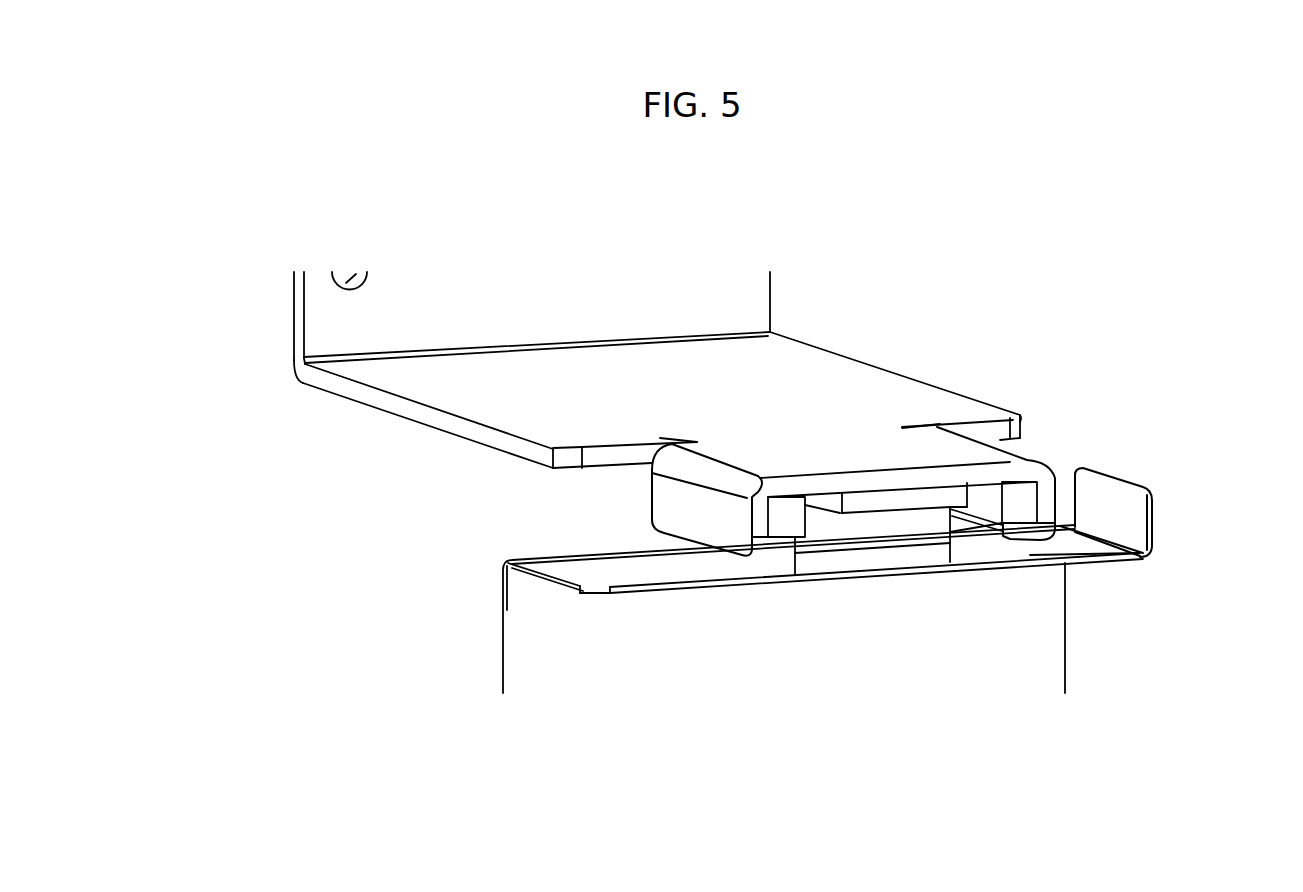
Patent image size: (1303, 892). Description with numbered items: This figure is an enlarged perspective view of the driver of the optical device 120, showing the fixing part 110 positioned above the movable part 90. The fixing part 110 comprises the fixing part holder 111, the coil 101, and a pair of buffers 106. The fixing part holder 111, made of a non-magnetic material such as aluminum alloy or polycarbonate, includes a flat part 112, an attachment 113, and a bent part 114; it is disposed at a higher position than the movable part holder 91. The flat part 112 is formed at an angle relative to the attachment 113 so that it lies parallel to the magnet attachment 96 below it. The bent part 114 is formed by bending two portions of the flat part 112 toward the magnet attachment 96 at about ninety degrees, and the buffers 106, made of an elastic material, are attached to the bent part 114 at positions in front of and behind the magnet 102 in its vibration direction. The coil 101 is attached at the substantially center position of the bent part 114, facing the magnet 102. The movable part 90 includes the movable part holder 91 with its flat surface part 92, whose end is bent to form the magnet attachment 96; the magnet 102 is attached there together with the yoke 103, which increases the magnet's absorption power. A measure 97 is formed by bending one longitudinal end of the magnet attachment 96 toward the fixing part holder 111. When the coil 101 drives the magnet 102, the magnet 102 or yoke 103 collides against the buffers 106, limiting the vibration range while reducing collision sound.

The movable part 90 is at (470, 655).
The movable part holder 91 is at (1227, 455).
The flat surface part 92 is at (1038, 675).
The magnet attachment 96 is at (1067, 547).
The measure 97 is at (1123, 495).
The coil 101 is at (933, 493).
The magnet 102 is at (893, 560).
The yoke 103 is at (857, 528).
The buffer 106 is at (785, 520).
The fixing part 110 is at (323, 402).
The fixing part holder 111 is at (783, 163).
The flat part 112 is at (783, 357).
The attachment 113 is at (742, 300).
The bent part 114 is at (722, 530).
The optical device 120 is at (207, 408).